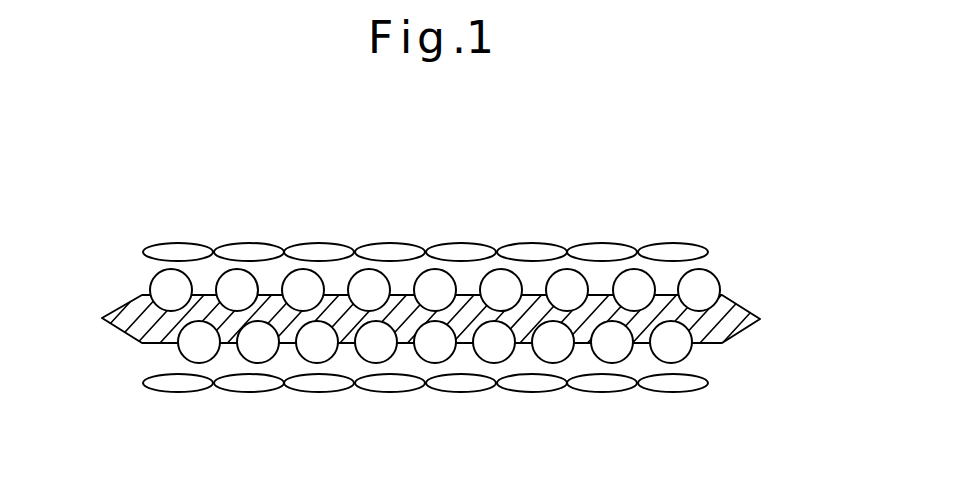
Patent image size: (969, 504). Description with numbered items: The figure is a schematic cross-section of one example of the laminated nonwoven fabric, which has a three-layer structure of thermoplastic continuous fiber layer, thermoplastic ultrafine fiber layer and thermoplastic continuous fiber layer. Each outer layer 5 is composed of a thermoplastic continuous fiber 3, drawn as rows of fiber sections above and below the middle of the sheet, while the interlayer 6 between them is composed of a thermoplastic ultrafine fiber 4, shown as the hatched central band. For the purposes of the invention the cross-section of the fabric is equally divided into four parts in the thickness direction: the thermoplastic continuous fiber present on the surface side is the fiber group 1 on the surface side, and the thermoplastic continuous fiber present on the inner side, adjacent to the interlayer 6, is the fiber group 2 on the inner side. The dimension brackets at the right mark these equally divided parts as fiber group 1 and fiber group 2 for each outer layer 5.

The fiber group on the surface side 1 is at (768, 247).
The fiber group on the inner side 2 is at (768, 283).
The thermoplastic continuous fiber 3 is at (637, 264).
The thermoplastic ultrafine fiber 4 is at (339, 290).
The outer layer 5 is at (103, 230).
The interlayer 6 is at (60, 285).